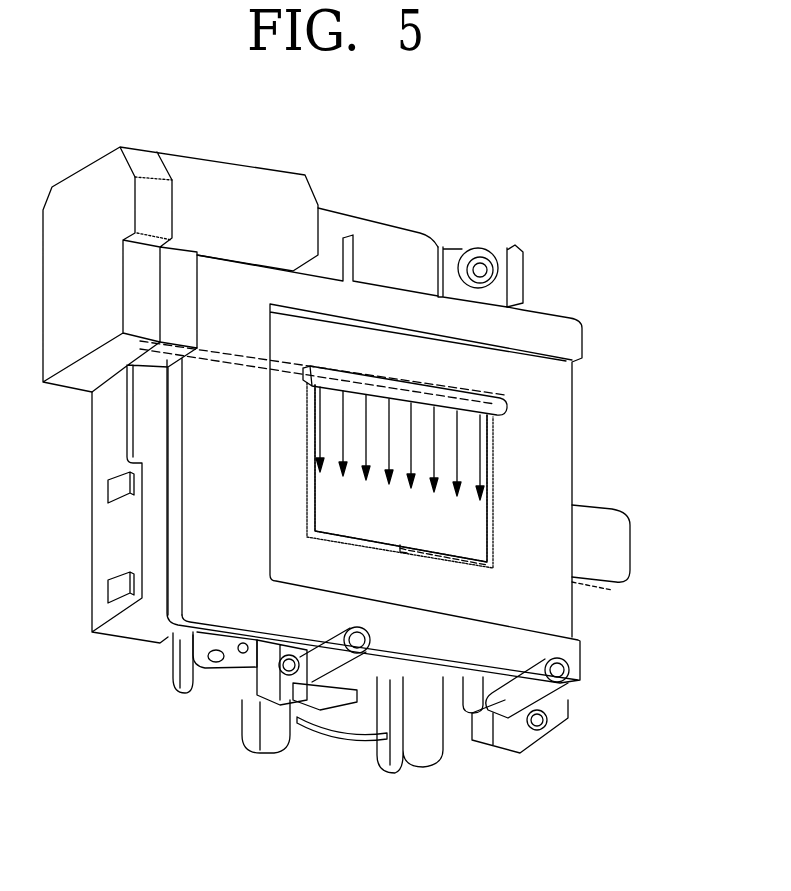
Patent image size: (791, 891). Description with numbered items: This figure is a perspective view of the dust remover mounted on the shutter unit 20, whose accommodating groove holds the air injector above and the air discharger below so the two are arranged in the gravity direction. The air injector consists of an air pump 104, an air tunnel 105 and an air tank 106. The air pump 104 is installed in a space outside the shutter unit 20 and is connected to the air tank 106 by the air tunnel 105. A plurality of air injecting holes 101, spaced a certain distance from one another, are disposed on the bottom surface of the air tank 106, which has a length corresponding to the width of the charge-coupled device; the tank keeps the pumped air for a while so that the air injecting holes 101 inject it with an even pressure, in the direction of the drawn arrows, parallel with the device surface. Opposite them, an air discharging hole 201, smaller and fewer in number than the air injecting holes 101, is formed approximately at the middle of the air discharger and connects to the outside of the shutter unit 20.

The shutter unit 20 is at (550, 318).
The air injecting holes 101 is at (495, 440).
The air pump 104 is at (92, 178).
The air tunnel 105 is at (223, 354).
The air tank 106 is at (508, 396).
The air discharging hole 201 is at (407, 553).